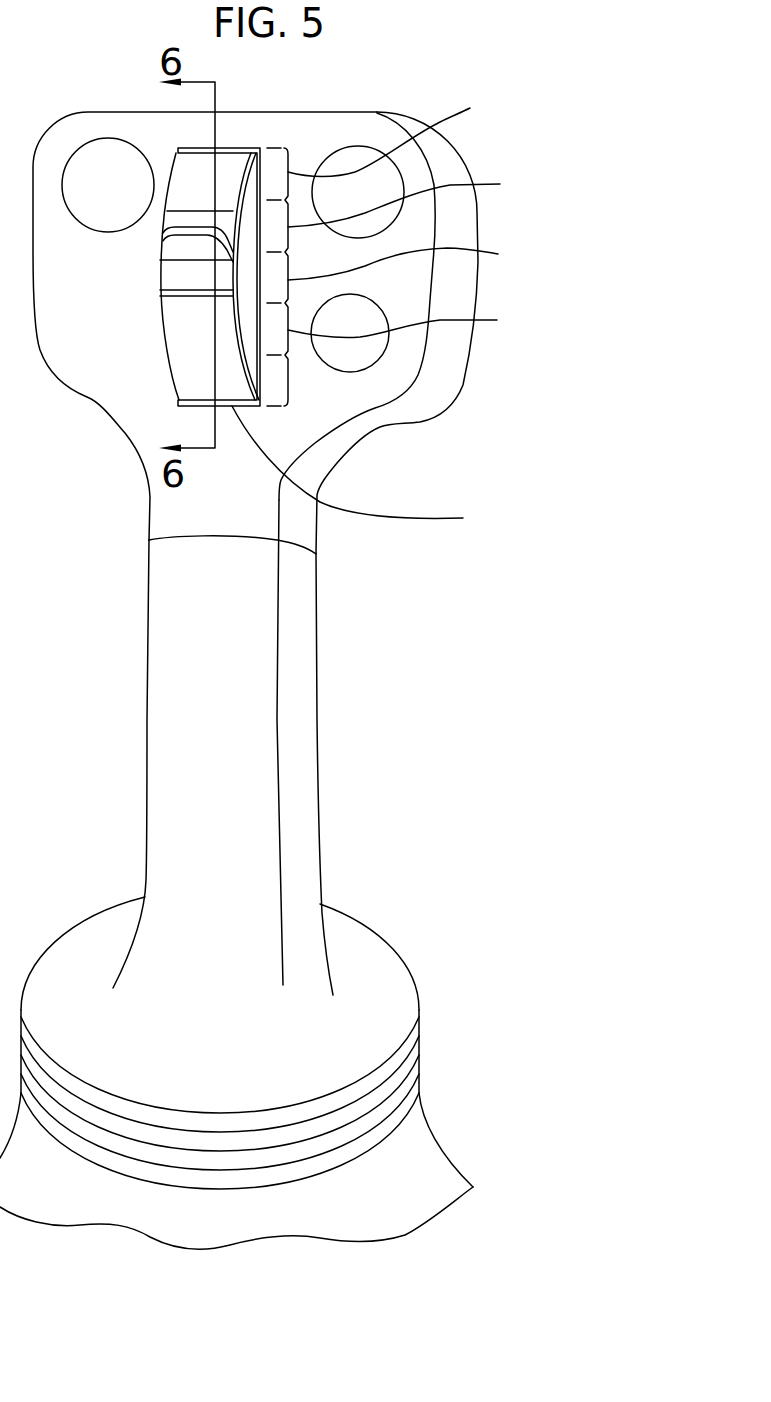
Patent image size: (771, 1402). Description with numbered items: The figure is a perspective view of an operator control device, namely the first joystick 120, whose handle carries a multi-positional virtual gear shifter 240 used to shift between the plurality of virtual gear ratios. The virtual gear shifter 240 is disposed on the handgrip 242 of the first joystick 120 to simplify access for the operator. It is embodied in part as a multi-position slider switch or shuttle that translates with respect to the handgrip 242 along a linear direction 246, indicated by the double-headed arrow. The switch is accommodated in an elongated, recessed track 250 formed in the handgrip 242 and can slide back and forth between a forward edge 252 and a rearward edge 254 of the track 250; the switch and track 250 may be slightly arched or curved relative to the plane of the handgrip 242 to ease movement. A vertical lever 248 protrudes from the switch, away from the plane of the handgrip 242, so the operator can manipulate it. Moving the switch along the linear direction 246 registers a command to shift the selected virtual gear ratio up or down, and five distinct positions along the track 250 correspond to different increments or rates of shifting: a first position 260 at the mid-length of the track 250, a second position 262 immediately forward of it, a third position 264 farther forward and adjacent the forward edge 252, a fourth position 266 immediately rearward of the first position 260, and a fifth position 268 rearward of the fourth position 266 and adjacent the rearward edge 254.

The first joystick 120 is at (297, 758).
The virtual gear shifter 240 is at (158, 133).
The handgrip 242 is at (370, 112).
The linear direction 246 is at (122, 152).
The vertical lever 248 is at (183, 247).
The track 250 is at (253, 185).
The forward edge 252 is at (236, 148).
The rearward edge 254 is at (367, 468).
The first position 260 is at (415, 259).
The second position 262 is at (415, 198).
The third position 264 is at (397, 137).
The fourth position 266 is at (412, 322).
The fifth position 268 is at (289, 381).